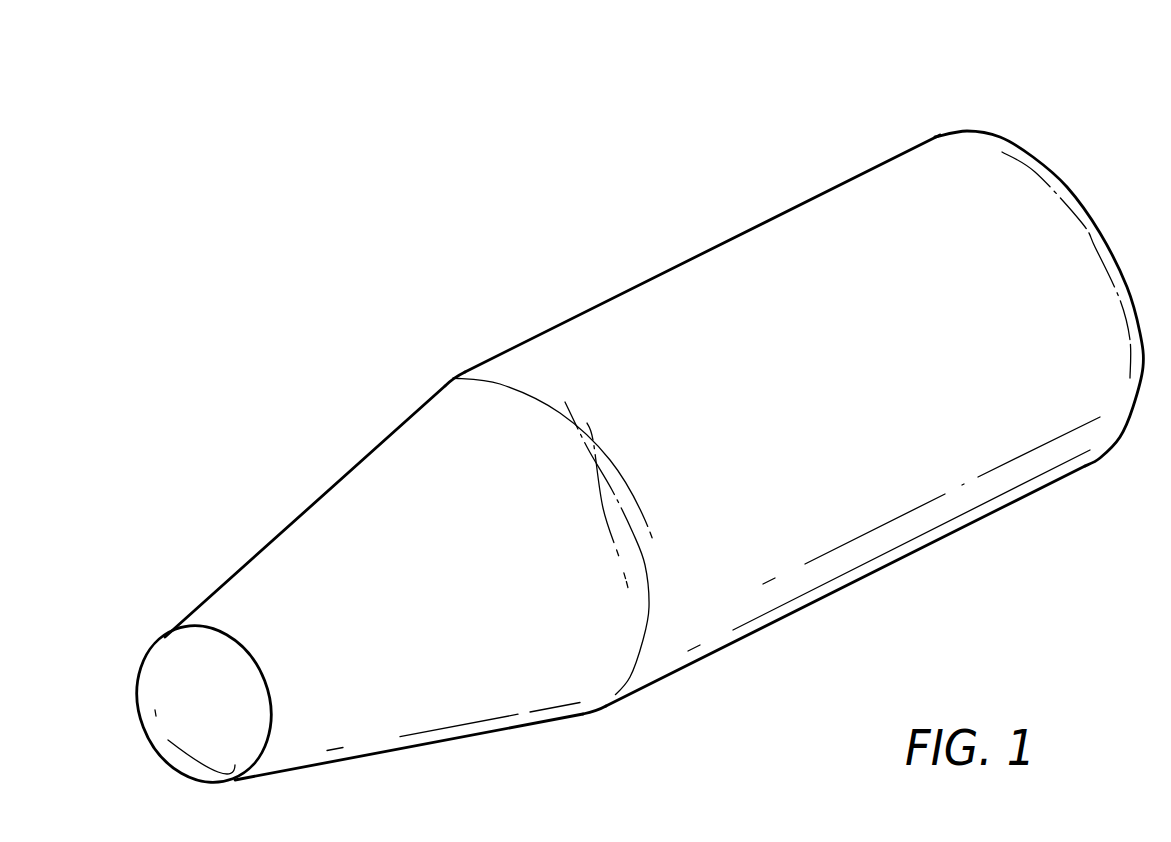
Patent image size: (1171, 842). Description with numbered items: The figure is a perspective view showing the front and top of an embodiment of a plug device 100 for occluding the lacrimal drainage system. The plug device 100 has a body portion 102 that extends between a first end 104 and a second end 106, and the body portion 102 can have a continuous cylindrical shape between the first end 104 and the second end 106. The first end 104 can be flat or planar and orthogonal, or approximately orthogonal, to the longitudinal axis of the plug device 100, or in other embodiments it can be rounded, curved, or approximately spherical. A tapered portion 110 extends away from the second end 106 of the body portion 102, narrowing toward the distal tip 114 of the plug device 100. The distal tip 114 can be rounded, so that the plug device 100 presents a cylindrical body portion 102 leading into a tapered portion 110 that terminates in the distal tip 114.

The plug device 100 is at (228, 227).
The body portion 102 is at (768, 222).
The first end 104 is at (972, 132).
The second end 106 is at (453, 380).
The tapered portion 110 is at (343, 512).
The distal tip 114 is at (180, 663).